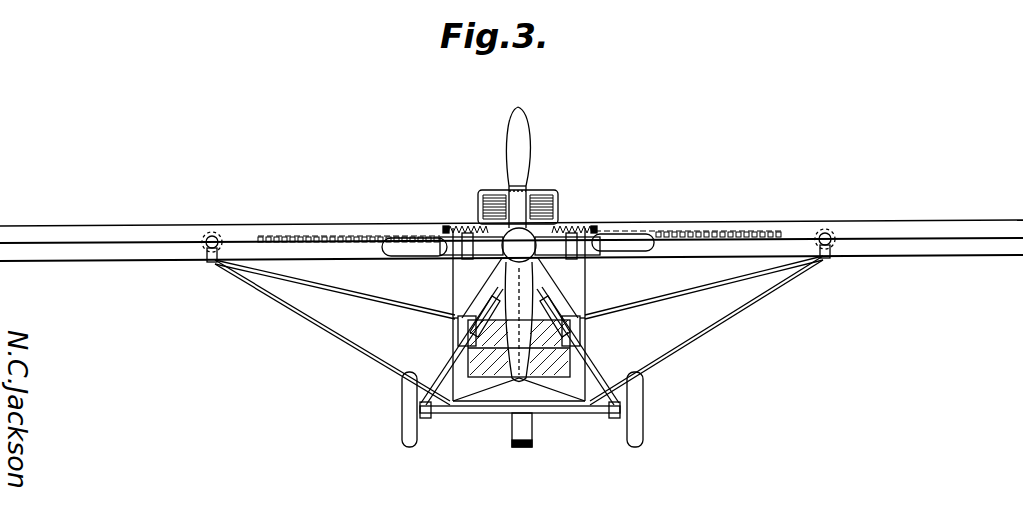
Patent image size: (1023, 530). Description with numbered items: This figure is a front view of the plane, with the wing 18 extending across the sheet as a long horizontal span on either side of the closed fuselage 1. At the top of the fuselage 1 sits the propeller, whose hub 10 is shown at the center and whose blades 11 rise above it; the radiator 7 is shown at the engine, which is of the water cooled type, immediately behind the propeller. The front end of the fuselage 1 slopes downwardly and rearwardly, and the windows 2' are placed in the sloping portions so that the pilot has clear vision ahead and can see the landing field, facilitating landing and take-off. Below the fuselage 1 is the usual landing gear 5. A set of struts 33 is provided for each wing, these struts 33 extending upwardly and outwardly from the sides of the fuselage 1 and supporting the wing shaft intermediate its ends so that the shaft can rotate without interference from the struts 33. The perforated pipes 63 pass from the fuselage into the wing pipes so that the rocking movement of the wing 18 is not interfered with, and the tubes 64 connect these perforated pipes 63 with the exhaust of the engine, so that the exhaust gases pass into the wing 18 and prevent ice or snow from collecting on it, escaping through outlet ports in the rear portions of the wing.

The fuselage 1 is at (573, 303).
The windows 2' is at (534, 322).
The landing gear 5 is at (513, 424).
The radiator 7 is at (485, 205).
The hub 10 is at (825, 300).
The blades 11 is at (523, 162).
The wing 18 is at (136, 232).
The struts 33 is at (367, 295).
The perforated pipes 63 is at (362, 234).
The tubes 64 is at (458, 228).